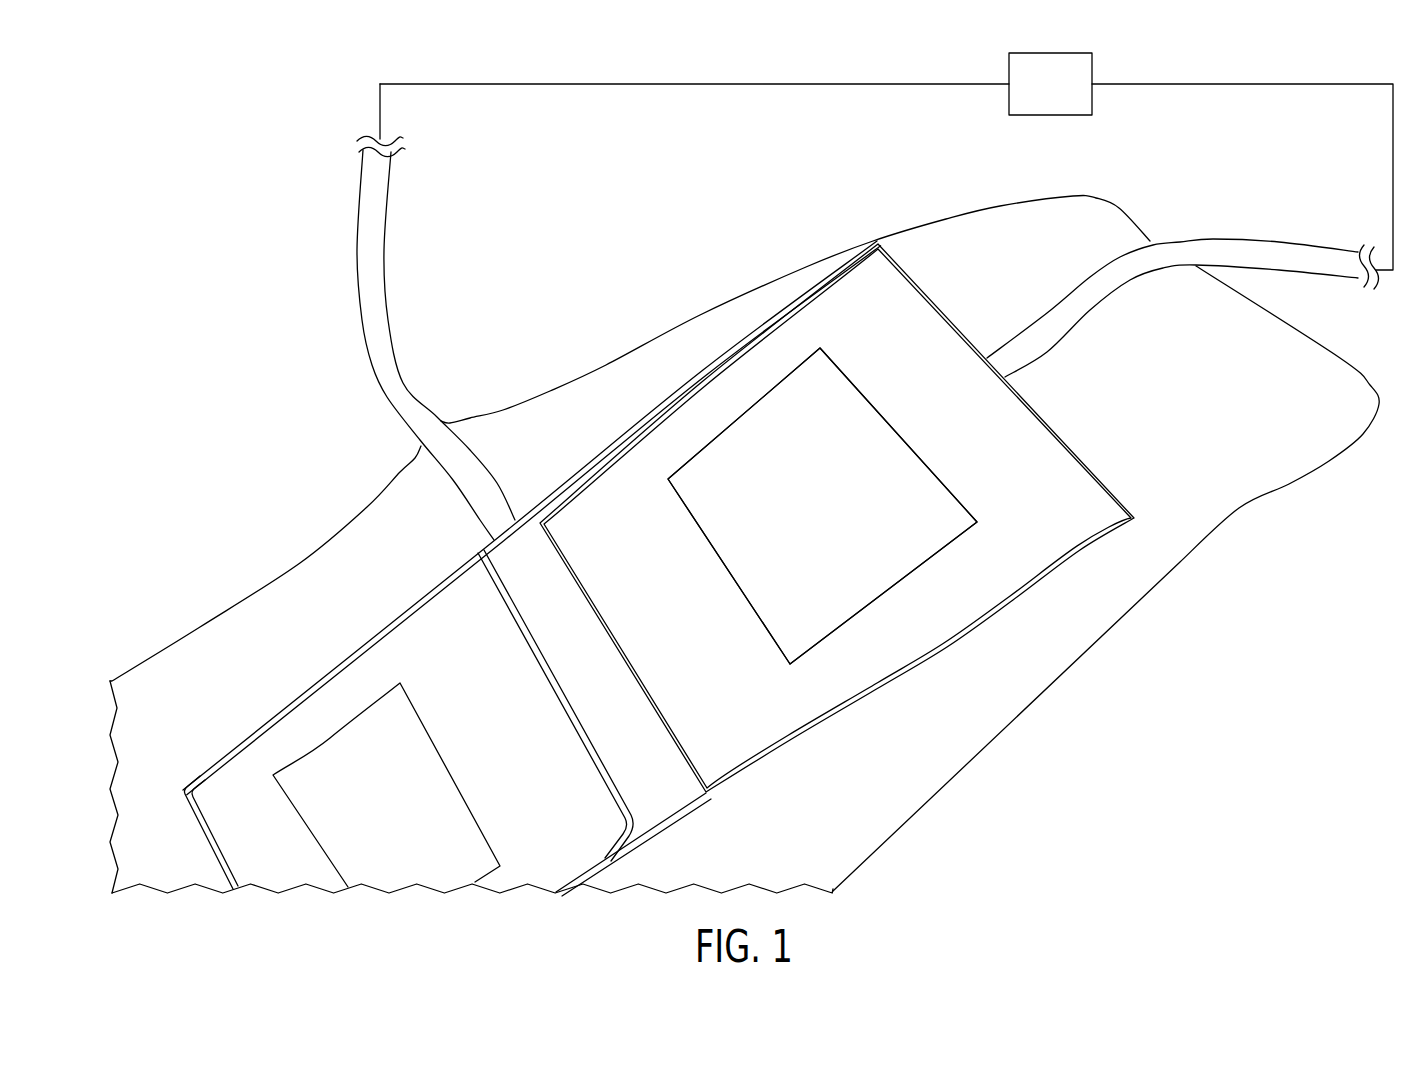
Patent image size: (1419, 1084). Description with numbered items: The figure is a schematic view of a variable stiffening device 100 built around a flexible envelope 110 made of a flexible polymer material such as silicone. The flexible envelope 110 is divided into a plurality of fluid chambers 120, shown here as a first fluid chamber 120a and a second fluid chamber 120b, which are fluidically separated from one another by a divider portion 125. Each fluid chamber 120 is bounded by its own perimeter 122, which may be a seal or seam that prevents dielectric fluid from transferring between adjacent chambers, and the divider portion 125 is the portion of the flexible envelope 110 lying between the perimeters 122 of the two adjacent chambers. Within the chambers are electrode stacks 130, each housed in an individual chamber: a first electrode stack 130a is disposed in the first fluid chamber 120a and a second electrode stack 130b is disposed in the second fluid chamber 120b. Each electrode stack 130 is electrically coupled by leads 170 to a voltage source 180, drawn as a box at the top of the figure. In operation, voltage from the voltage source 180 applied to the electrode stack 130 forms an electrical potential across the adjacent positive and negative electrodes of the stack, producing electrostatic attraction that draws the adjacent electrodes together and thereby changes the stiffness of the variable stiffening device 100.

The variable stiffening device 100 is at (697, 164).
The flexible envelope 110 is at (660, 347).
The fluid chamber 120 is at (541, 482).
The first fluid chamber 120a is at (837, 487).
The second fluid chamber 120b is at (408, 719).
The perimeter 122 is at (575, 723).
The divider portion 125 is at (662, 807).
The electrode stack 130 is at (822, 506).
The first electrode stack 130a is at (822, 478).
The second electrode stack 130b is at (360, 783).
The leads 170 is at (358, 290).
The voltage source 180 is at (1093, 65).